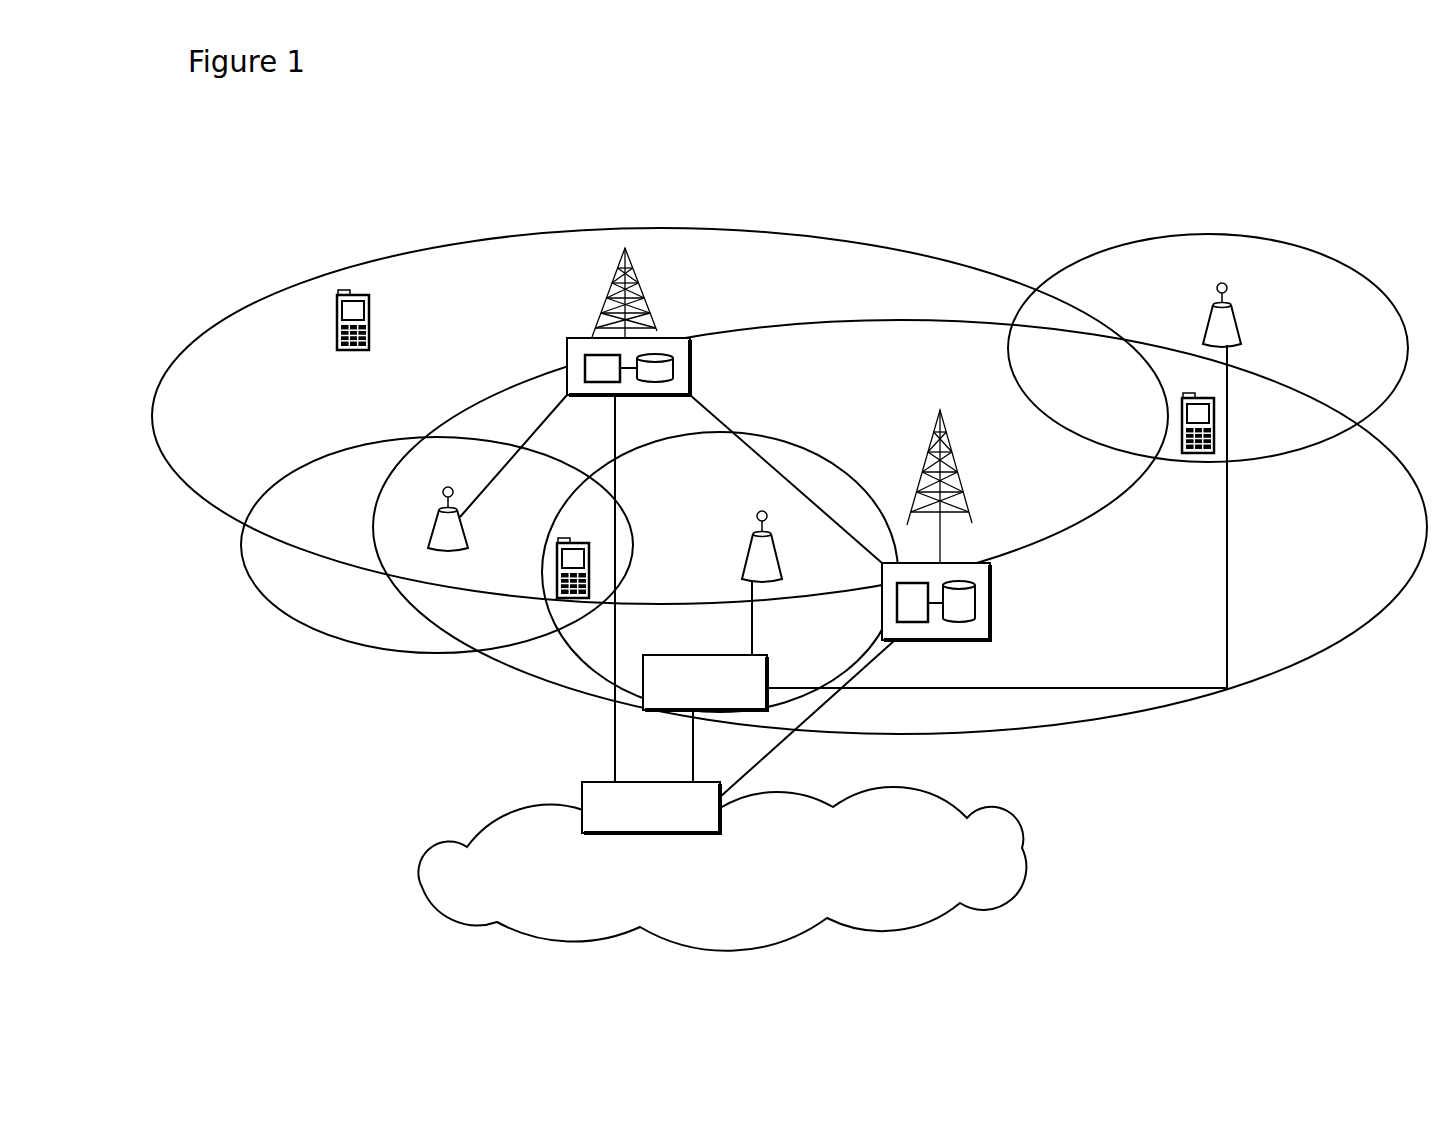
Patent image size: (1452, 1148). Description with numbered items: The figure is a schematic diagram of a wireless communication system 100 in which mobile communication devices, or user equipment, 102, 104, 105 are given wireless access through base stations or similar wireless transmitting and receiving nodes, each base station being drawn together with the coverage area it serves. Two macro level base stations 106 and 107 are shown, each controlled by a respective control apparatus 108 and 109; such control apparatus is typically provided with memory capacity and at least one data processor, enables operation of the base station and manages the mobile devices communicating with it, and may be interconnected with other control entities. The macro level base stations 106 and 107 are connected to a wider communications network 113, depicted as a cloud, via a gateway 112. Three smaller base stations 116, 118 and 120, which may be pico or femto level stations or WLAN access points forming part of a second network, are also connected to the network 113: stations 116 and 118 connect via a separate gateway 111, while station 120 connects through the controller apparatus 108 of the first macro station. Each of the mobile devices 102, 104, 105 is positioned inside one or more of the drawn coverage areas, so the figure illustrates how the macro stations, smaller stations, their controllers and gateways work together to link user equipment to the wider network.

The wireless communication system 100 is at (250, 277).
The mobile communication device 102 is at (335, 343).
The mobile communication device 104 is at (556, 573).
The mobile communication device 105 is at (1196, 455).
The macro level base station 106 is at (607, 302).
The macro level base station 107 is at (963, 487).
The control apparatus 108 is at (567, 352).
The control apparatus 109 is at (980, 630).
The gateway 111 is at (650, 688).
The gateway 112 is at (583, 782).
The wider communications network 113 is at (500, 845).
The smaller base station 116 is at (1207, 318).
The smaller base station 118 is at (762, 565).
The smaller base station 120 is at (434, 522).